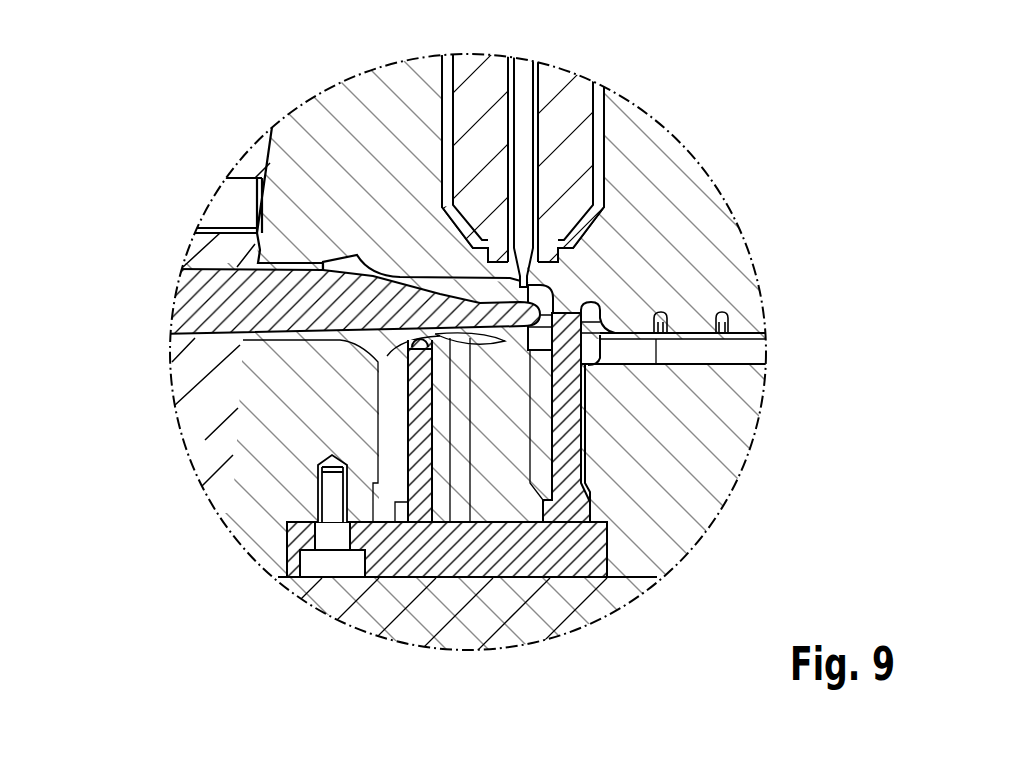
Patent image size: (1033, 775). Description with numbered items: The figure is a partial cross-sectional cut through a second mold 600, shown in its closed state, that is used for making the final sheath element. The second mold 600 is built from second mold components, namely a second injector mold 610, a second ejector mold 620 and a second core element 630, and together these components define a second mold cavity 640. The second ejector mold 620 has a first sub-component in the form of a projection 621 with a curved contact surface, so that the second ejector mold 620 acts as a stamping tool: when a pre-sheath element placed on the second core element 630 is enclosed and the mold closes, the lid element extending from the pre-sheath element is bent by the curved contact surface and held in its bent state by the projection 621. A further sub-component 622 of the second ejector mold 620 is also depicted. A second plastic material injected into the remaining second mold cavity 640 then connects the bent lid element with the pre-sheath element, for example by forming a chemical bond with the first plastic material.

The second mold 600 is at (780, 329).
The second injector mold 610 is at (697, 171).
The second ejector mold 620 is at (677, 514).
The projection 621 is at (498, 488).
The second sleeve 622 is at (460, 342).
The second core element 630 is at (188, 308).
The second mold cavity 640 is at (548, 284).